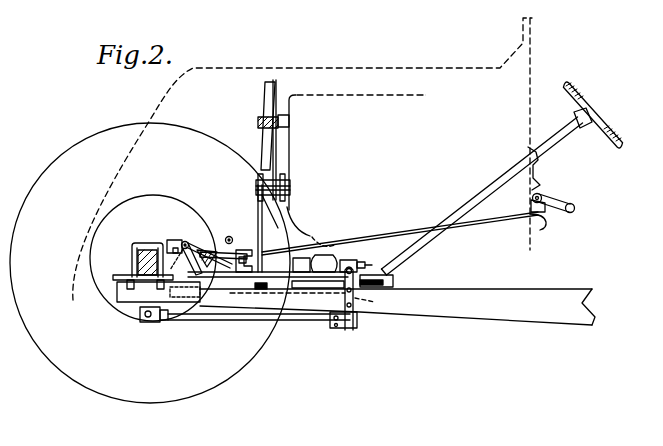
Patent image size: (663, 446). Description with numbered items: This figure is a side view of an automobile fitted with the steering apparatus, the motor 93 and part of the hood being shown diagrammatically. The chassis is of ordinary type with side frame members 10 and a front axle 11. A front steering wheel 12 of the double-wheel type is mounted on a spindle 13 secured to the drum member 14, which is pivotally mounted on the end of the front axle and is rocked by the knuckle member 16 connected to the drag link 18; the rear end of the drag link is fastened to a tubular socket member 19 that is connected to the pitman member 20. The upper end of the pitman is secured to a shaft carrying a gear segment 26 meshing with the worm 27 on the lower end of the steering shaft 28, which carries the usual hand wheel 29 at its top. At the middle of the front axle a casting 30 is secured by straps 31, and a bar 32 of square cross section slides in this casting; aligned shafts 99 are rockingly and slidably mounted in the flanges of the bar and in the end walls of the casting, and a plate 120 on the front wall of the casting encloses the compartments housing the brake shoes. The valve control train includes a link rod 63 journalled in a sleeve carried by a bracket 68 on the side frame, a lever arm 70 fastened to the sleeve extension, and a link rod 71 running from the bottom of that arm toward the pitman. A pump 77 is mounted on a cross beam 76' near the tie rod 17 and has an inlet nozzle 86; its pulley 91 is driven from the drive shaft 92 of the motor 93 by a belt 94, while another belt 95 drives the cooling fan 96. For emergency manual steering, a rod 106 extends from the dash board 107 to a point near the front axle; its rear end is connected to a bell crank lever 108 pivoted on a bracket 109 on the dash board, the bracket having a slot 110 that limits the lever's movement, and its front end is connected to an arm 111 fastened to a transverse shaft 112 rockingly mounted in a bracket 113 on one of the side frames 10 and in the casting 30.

The side frame member 10 is at (523, 312).
The front axle 11 is at (137, 262).
The front steering wheel 12 is at (90, 378).
The spindle 13 is at (302, 151).
The drum member 14 is at (103, 298).
The knuckle member 16 is at (210, 262).
The tie rod 17 is at (250, 253).
The drag link 18 is at (200, 322).
The tubular socket member 19 is at (359, 322).
The pitman member 20 is at (358, 308).
The gear segment 26 is at (378, 273).
The worm 27 is at (375, 302).
The steering shaft 28 is at (493, 190).
The hand wheel 29 is at (584, 96).
The casting 30 is at (178, 238).
The strap 31 is at (141, 246).
The bar 32 is at (117, 280).
The link rod 63 is at (237, 247).
The bracket 68 is at (244, 243).
The lever arm 70 is at (229, 236).
The link rod 71 is at (283, 280).
The cross beam 76' is at (317, 313).
The pump 77 is at (327, 250).
The nozzle 86 is at (363, 262).
The pulley 91 is at (273, 277).
The drive shaft 92 is at (286, 179).
The motor 93 is at (357, 152).
The belt 94 is at (260, 213).
The belt 95 is at (279, 158).
The cooling fan 96 is at (265, 93).
The shaft 99 is at (183, 243).
The rod 106 is at (412, 230).
The dash board 107 is at (532, 78).
The bell crank lever 108 is at (562, 204).
The bracket 109 is at (539, 225).
The slot 110 is at (550, 211).
The arm 111 is at (198, 243).
The transverse shaft 112 is at (188, 241).
The bracket 113 is at (185, 268).
The plate 120 is at (167, 243).